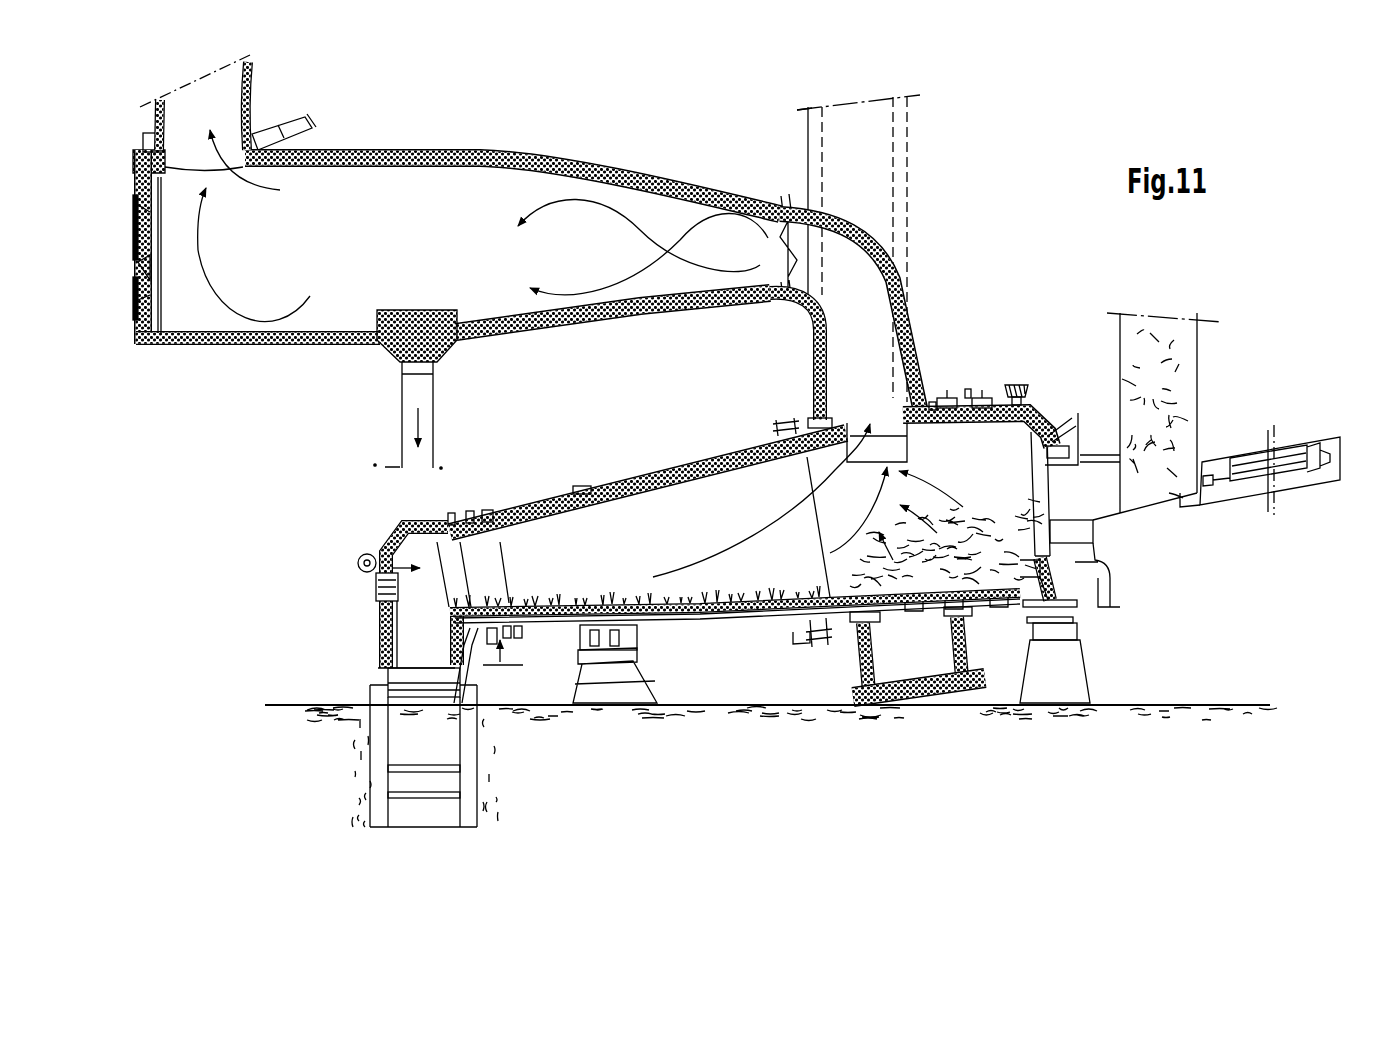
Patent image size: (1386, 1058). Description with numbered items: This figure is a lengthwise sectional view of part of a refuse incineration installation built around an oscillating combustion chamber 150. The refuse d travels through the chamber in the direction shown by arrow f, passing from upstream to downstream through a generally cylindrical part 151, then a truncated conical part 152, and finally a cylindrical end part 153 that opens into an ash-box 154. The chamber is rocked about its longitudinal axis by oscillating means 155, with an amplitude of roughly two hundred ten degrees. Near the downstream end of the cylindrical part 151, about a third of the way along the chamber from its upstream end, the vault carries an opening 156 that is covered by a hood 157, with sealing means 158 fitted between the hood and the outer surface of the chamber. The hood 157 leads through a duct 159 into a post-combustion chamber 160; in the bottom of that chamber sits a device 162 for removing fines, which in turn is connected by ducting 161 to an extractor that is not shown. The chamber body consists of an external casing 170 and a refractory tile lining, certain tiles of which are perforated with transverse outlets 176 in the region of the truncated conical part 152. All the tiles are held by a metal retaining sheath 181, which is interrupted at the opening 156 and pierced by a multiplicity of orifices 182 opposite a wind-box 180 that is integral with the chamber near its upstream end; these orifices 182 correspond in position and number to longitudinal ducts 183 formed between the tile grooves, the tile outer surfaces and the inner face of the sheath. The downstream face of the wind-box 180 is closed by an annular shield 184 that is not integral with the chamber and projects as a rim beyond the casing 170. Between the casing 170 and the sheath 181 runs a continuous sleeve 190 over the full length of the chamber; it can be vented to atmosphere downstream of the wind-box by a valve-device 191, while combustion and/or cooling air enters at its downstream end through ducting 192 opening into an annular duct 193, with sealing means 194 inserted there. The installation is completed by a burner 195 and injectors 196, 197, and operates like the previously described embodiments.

The combustion chamber 150 is at (650, 462).
The cylindrical part 151 is at (1023, 388).
The truncated conical part 152 is at (694, 500).
The cylindrical end part 153 is at (497, 553).
The ash-box 154 is at (423, 645).
The oscillating means 155 is at (647, 650).
The opening 156 is at (893, 443).
The hood 157 is at (913, 325).
The sealing means 158 is at (808, 412).
The duct 159 is at (633, 180).
The post-combustion chamber 160 is at (387, 200).
The ducting 161 is at (252, 93).
The device for removal of fines 162 is at (420, 385).
The external casing 170 is at (741, 617).
The transverse outlets 176 is at (600, 603).
The wind-box 180 is at (984, 395).
The metal retaining sheath 181 is at (690, 618).
The orifices 182 is at (1022, 572).
The longitudinal ducts 183 is at (780, 616).
The shield 184 is at (975, 392).
The continuous sleeve 190 is at (620, 482).
The valve-device 191 is at (948, 394).
The ducting 192 is at (507, 665).
The annular duct 193 is at (473, 513).
The sealing means 194 is at (453, 513).
The burner 195 is at (360, 556).
The injector 196 is at (377, 583).
The injector 197 is at (1067, 443).
The refuse d is at (883, 440).
The arrow indicating refuse flow f is at (728, 580).